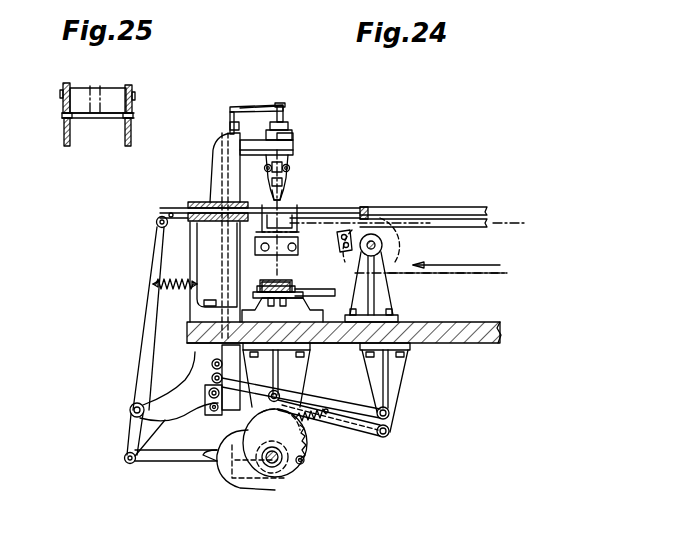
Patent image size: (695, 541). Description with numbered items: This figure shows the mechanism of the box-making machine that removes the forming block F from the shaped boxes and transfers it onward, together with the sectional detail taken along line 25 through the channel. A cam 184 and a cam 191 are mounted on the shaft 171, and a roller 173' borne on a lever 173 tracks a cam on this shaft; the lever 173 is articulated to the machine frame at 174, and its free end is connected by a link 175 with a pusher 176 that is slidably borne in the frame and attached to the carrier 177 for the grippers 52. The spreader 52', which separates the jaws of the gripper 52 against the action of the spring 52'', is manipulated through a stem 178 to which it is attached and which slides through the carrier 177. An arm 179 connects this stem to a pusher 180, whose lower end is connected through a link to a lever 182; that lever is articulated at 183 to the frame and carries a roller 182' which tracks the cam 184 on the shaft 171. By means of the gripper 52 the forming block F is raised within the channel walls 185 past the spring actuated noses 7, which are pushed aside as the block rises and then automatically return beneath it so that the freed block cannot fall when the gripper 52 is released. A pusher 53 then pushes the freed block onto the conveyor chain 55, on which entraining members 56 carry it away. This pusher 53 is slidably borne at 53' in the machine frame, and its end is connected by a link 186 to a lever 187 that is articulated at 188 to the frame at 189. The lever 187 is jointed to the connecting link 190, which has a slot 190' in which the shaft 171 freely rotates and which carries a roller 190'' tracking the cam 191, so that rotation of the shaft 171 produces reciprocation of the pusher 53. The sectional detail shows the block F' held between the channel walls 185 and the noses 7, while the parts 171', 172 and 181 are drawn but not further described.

In FIG. 25, the spring actuated noses 7 is at (62, 115).
In FIG. 24, the spring actuated noses 7 is at (272, 204).
In FIG. 24, the section line 25— 25 is at (294, 187).
In FIG. 24, the grippers 52 is at (303, 210).
In FIG. 24, the spreader 52' is at (328, 161).
In FIG. 24, the spring 52'' is at (261, 175).
In FIG. 24, the plunger (pusher) 53 is at (379, 182).
In FIG. 24, the slide bearing of pusher 53' is at (343, 229).
In FIG. 24, the conveyor chain 55 is at (465, 278).
In FIG. 24, the entraining members 56 is at (372, 222).
In FIG. 24, the shaft 171 is at (270, 479).
In FIG. 24, the shaft bearing 171' is at (277, 483).
In FIG. 24, the cam disc 172 is at (308, 436).
In FIG. 24, the lever 173 is at (330, 434).
In FIG. 24, the roller 173' is at (344, 355).
In FIG. 24, the articulation point of lever 174 is at (392, 432).
In FIG. 24, the link 175 is at (165, 395).
In FIG. 24, the pusher 176 is at (217, 133).
In FIG. 24, the carrier 177 is at (294, 146).
In FIG. 24, the stem 178 is at (284, 118).
In FIG. 24, the arm 179 is at (262, 105).
In FIG. 24, the pusher 180 is at (233, 107).
In FIG. 24, the lever 181 is at (170, 420).
In FIG. 24, the lever 182 is at (331, 391).
In FIG. 24, the roller 182' is at (306, 301).
In FIG. 24, the articulation point of lever 183 is at (392, 416).
In FIG. 24, the cam 184 is at (306, 424).
In FIG. 25, the channel walls 185 is at (66, 84).
In FIG. 24, the channel walls 185 is at (442, 207).
In FIG. 24, the link 186 is at (158, 220).
In FIG. 24, the lever 187 is at (150, 296).
In FIG. 24, the articulation point 188 is at (130, 414).
In FIG. 24, the frame articulation point 189 is at (125, 456).
In FIG. 24, the connecting link 190 is at (165, 472).
In FIG. 24, the slot 190' is at (243, 470).
In FIG. 24, the roller 190'' is at (311, 483).
In FIG. 24, the cam 191 is at (230, 470).
In FIG. 24, the forming block F is at (291, 277).
In FIG. 25, the workpiece F' is at (101, 84).